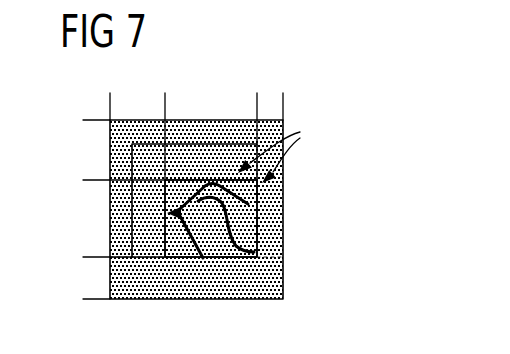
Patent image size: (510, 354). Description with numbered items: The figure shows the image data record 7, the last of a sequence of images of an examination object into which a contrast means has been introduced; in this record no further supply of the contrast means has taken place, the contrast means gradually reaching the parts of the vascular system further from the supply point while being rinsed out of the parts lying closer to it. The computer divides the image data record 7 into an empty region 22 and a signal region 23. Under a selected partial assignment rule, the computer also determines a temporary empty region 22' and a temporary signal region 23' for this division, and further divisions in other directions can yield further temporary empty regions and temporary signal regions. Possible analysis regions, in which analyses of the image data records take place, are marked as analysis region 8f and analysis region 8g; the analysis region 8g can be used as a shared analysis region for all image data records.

The image data record 7 is at (285, 265).
The empty region 22 is at (196, 304).
The signal region 23 is at (212, 268).
The temporary empty region 22' is at (177, 182).
The temporary signal region 23' is at (161, 161).
The analysis region 8f is at (268, 230).
The analysis region 8g is at (284, 145).